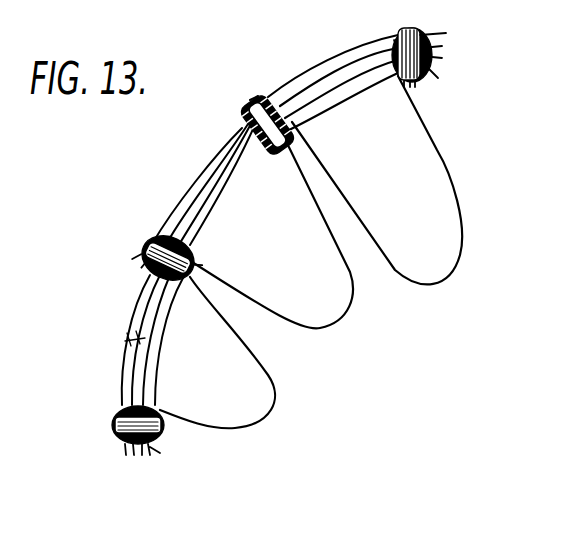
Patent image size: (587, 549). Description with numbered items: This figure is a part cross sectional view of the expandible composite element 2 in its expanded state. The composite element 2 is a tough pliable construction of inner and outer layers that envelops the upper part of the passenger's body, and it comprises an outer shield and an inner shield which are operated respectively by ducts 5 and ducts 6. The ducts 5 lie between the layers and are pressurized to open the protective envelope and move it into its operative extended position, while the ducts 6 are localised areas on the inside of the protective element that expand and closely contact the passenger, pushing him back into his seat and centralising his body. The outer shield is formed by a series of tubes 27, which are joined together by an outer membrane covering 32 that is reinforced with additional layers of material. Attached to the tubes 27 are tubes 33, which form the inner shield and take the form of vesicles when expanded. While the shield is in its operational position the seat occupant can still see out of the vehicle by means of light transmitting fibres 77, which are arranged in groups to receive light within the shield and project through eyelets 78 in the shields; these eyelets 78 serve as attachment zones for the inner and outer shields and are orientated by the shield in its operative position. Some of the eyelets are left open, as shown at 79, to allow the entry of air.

The composite element 2 is at (363, 49).
The ducts 5 is at (118, 345).
The ducts 6 is at (451, 222).
The tubes 27 is at (250, 206).
The outer membrane covering 32 is at (240, 128).
The tubes 33 is at (322, 252).
The light transmitting fibres 77 is at (240, 238).
The eyelets 78 is at (263, 100).
The open eyelets 79 is at (257, 98).